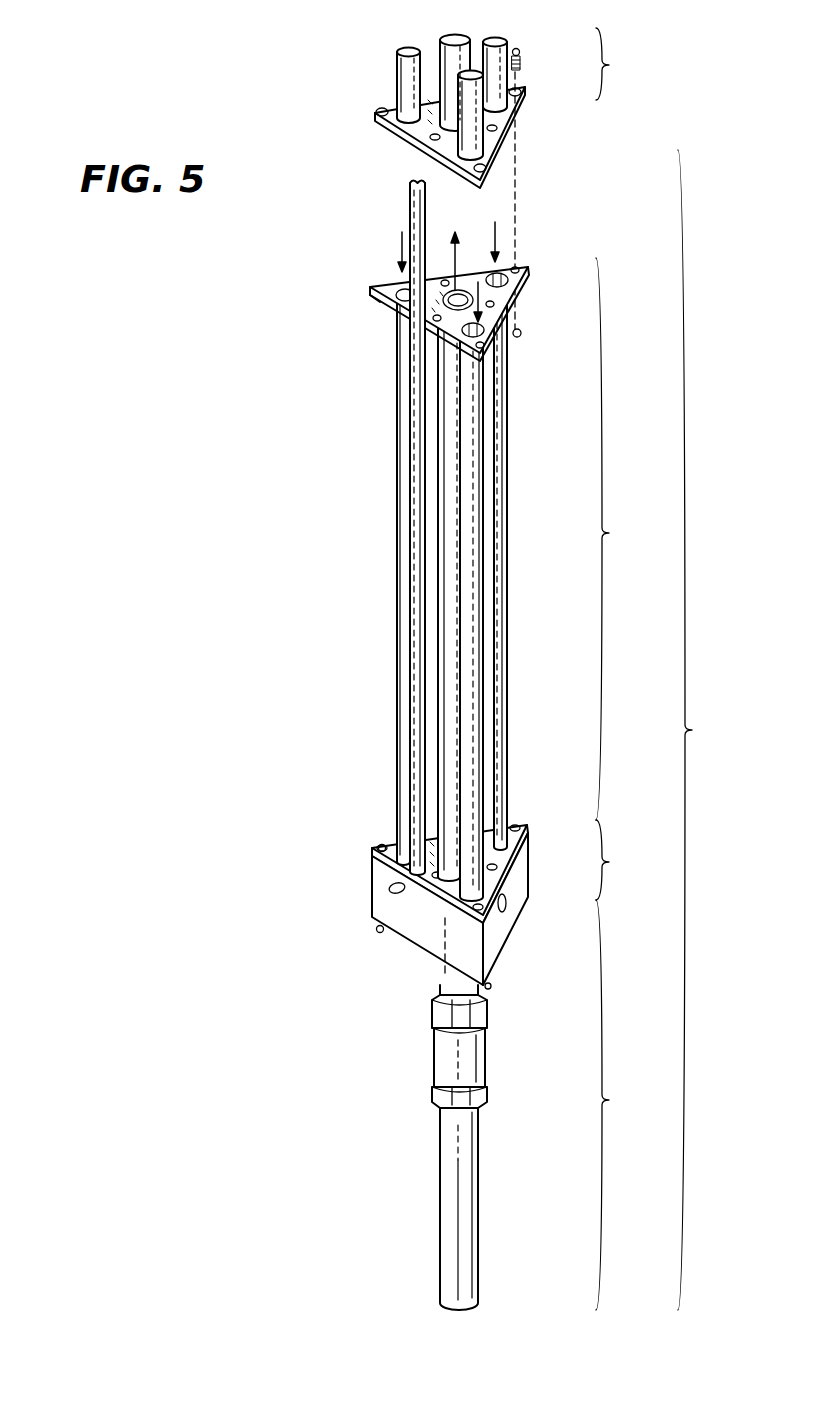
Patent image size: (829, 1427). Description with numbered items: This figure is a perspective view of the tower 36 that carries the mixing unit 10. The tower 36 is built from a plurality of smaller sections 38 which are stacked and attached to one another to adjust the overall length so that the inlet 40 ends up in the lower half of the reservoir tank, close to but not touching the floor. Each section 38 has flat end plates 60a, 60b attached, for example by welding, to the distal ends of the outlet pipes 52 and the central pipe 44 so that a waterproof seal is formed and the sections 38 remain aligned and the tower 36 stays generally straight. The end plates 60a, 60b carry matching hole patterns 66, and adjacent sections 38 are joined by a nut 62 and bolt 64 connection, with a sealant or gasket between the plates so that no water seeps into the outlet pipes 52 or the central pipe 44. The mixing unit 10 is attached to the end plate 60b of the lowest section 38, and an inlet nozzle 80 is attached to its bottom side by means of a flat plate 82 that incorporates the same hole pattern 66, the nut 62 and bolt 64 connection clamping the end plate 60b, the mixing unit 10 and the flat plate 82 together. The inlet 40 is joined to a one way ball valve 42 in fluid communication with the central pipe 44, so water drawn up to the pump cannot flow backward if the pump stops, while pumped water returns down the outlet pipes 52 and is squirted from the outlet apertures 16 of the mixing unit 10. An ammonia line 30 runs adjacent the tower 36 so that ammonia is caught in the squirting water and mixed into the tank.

The mixing unit 10 is at (624, 860).
The outlet apertures 16 is at (388, 888).
The ammonia line 30 is at (409, 205).
The tower 36 is at (708, 730).
The sections 38 is at (624, 424).
The inlet 40 is at (465, 1193).
The one way ball valve 42 is at (468, 1052).
The central pipe 44 is at (452, 593).
The outlet pipes 52 is at (405, 651).
The end plate 60a is at (366, 275).
The end plate 60b is at (366, 100).
The nut 62 is at (521, 333).
The bolt 64 is at (521, 62).
The hole pattern 66 is at (388, 300).
The inlet nozzle 80 is at (624, 1105).
The flat plate 82 is at (368, 905).